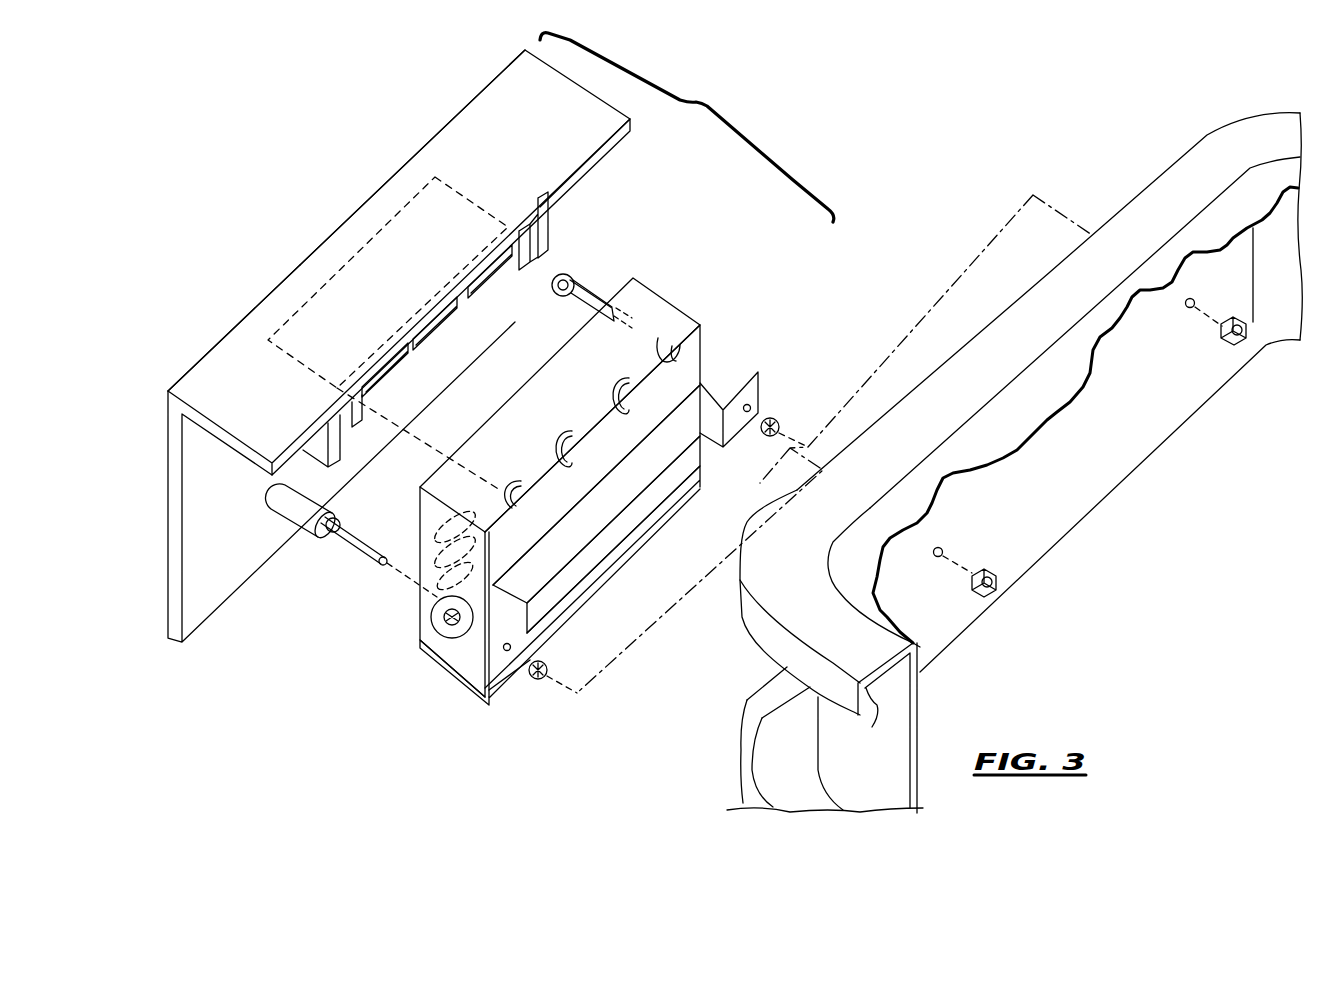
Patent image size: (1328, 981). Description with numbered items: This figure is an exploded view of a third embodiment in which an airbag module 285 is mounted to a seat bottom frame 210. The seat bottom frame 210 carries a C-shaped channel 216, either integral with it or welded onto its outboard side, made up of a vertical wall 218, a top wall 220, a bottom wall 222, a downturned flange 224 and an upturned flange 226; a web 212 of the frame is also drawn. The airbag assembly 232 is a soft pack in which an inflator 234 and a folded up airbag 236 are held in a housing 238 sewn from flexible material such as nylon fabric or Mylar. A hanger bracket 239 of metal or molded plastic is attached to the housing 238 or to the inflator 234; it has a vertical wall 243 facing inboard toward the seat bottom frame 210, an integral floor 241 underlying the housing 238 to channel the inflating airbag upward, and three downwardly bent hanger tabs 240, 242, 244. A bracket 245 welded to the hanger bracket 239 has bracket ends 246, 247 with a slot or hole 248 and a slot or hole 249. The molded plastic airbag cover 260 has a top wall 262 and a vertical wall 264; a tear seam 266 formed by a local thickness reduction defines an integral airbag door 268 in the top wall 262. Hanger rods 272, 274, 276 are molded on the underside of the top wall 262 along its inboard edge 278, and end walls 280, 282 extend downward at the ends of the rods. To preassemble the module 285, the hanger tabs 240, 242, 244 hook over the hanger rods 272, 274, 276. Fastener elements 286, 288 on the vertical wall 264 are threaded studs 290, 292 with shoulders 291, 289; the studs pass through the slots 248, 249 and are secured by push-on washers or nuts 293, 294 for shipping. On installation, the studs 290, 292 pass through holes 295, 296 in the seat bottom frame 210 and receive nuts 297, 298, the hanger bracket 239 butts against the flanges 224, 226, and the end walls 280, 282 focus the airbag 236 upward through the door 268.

The seat bottom frame 210 is at (1221, 157).
The web of frame rail 212 is at (1090, 362).
The C-shaped channel 216 is at (1158, 165).
The vertical wall 218 is at (935, 608).
The top wall 220 is at (770, 592).
The bottom wall 222 is at (780, 725).
The downturned flange 224 is at (873, 700).
The upturned flange 226 is at (740, 745).
The airbag assembly 232 is at (684, 297).
The inflator 234 is at (440, 630).
The folded up airbag 236 is at (433, 552).
The housing 238 is at (505, 410).
The hanger bracket 239 is at (560, 585).
The hanger tab 240 is at (552, 452).
The floor 241 is at (440, 660).
The hanger tab 242 is at (594, 410).
The vertical wall 243 is at (643, 517).
The hanger tab 244 is at (640, 362).
The bracket 245 is at (598, 517).
The bracket end 246 is at (505, 652).
The bracket end 247 is at (752, 390).
The slot or hole 248 is at (507, 660).
The slot or hole 249 is at (746, 413).
The airbag cover 260 is at (377, 346).
The top wall 262 is at (443, 142).
The vertical wall 264 is at (178, 455).
The tear seam 266 is at (330, 272).
The airbag door 268 is at (378, 240).
The hanger rod 272 is at (385, 365).
The hanger rod 274 is at (438, 300).
The hanger rod 276 is at (490, 270).
The inboard edge 278 is at (578, 175).
The end wall 280 is at (327, 445).
The end wall 282 is at (525, 228).
The airbag module 285 is at (687, 127).
The fastener element 286 is at (290, 512).
The fastener element 288 is at (560, 273).
The shoulder 289 is at (572, 275).
The threaded stud 290 is at (334, 537).
The shoulder 291 is at (318, 530).
The threaded stud 292 is at (594, 297).
The push-on plastic washer or threaded nut 293 is at (546, 663).
The push-on plastic washer or threaded nut 294 is at (779, 422).
The hole 295 is at (942, 550).
The hole 296 is at (1193, 300).
The nut 297 is at (990, 570).
The nut 298 is at (1222, 346).